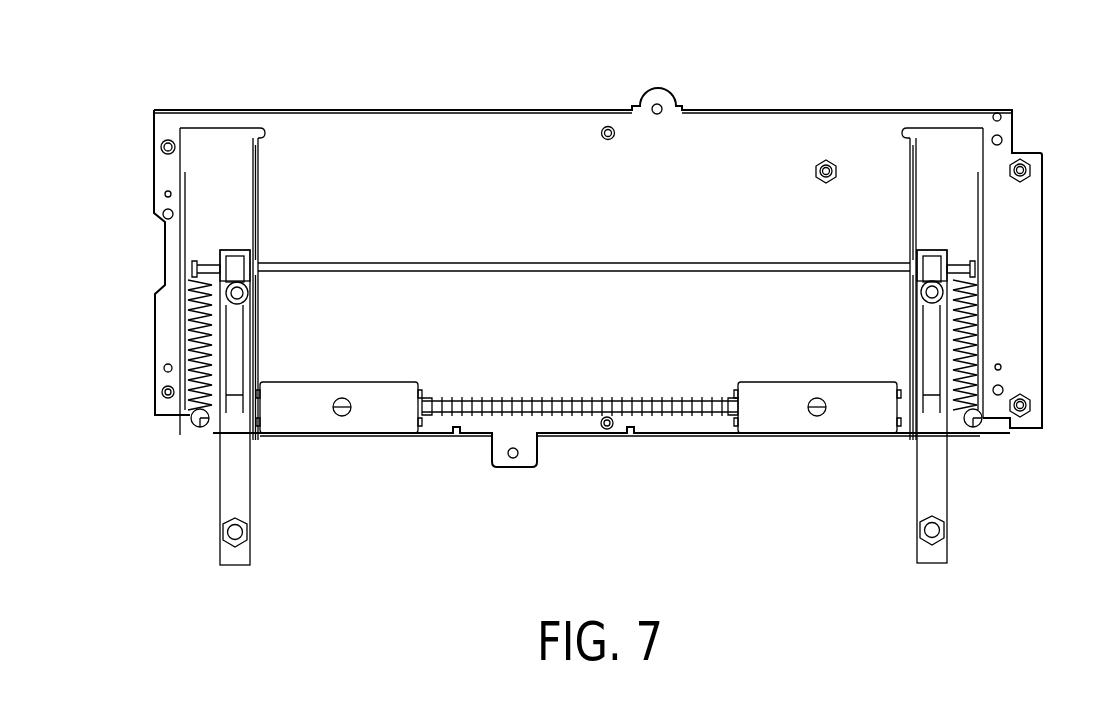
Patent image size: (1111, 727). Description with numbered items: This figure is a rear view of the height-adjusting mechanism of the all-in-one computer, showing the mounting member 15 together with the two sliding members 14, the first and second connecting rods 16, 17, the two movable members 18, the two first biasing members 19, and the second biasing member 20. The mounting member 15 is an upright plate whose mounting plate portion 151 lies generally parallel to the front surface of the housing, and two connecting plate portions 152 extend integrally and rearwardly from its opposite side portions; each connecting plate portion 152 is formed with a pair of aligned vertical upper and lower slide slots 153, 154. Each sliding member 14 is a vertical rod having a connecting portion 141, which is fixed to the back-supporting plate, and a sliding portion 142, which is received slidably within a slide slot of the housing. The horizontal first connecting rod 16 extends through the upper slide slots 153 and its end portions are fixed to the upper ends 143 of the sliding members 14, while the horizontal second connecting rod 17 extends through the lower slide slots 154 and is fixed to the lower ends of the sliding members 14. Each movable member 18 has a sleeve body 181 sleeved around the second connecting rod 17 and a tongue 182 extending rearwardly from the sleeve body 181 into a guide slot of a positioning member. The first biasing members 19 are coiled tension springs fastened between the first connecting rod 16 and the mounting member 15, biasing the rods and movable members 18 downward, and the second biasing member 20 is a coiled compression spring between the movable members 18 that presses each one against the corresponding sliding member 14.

The sliding member 14 is at (588, 406).
The connecting portion 141 is at (220, 555).
The sliding portion 142 is at (227, 252).
The upper end 143 is at (194, 268).
The mounting member 15 is at (742, 99).
The mounting plate portion 151 is at (545, 139).
The connecting plate portion 152 is at (260, 157).
The upper slide slot 153 is at (257, 206).
The lower slide slot 154 is at (258, 312).
The first connecting rod 16 is at (610, 262).
The second connecting rod 17 is at (638, 398).
The movable member 18 is at (578, 408).
The sleeve body 181 is at (386, 414).
The tongue 182 is at (342, 416).
The first biasing member 19 is at (194, 325).
The second biasing member 20 is at (572, 398).